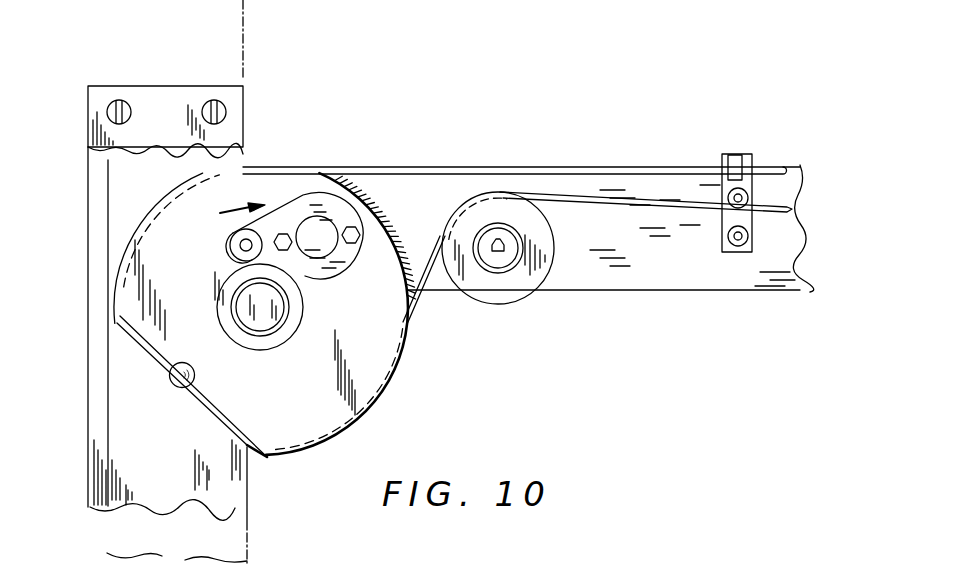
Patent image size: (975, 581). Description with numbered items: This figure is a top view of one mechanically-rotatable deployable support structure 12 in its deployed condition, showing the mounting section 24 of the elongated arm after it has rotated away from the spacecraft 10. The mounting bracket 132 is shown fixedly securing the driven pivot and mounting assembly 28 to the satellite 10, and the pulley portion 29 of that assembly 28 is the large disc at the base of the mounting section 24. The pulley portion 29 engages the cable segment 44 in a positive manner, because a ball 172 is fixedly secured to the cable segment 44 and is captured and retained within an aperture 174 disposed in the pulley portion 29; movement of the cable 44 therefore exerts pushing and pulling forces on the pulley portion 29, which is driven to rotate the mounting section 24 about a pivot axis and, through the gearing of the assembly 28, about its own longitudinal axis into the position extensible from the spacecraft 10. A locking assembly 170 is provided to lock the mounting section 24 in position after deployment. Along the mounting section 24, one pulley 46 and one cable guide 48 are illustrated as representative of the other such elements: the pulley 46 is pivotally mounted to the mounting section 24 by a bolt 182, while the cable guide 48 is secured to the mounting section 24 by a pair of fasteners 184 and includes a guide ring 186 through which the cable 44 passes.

The satellite 10 is at (245, 62).
The mechanically-rotatable deployable support structure 12 is at (649, 149).
The mounting section 24 is at (657, 287).
The driven pivot and mounting assembly 28 is at (128, 378).
The pulley portion 29 is at (265, 314).
The cable segment 44 is at (567, 172).
The pulley 46 is at (520, 292).
The cable guide 48 is at (750, 157).
The mounting bracket 132 is at (138, 86).
The locking assembly 170 is at (222, 232).
The ball 172 is at (181, 363).
The aperture 174 is at (196, 375).
The bolt 182 is at (498, 254).
The fasteners 184 is at (748, 195).
The guide ring 186 is at (736, 154).